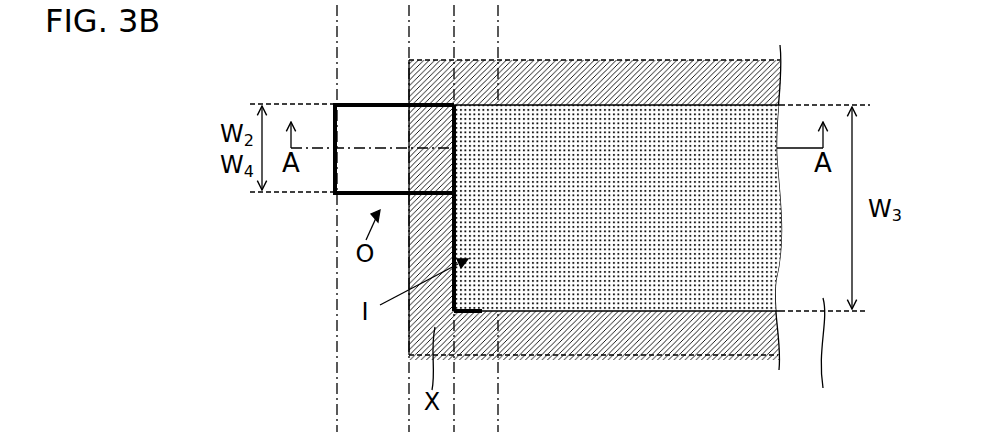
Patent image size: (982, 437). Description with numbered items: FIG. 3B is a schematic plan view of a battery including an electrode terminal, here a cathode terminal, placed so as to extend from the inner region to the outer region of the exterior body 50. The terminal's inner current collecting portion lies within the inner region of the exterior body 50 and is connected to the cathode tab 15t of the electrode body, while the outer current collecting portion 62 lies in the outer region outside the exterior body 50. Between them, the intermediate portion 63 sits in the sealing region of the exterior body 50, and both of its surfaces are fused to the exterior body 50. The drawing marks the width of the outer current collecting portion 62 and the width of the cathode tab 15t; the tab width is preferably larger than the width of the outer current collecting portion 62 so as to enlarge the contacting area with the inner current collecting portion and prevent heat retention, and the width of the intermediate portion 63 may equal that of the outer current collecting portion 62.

The exterior body 50 is at (704, 85).
The outer current collecting portion 62 is at (367, 118).
The intermediate portion 63 is at (432, 118).
The cathode tab 15t is at (477, 298).